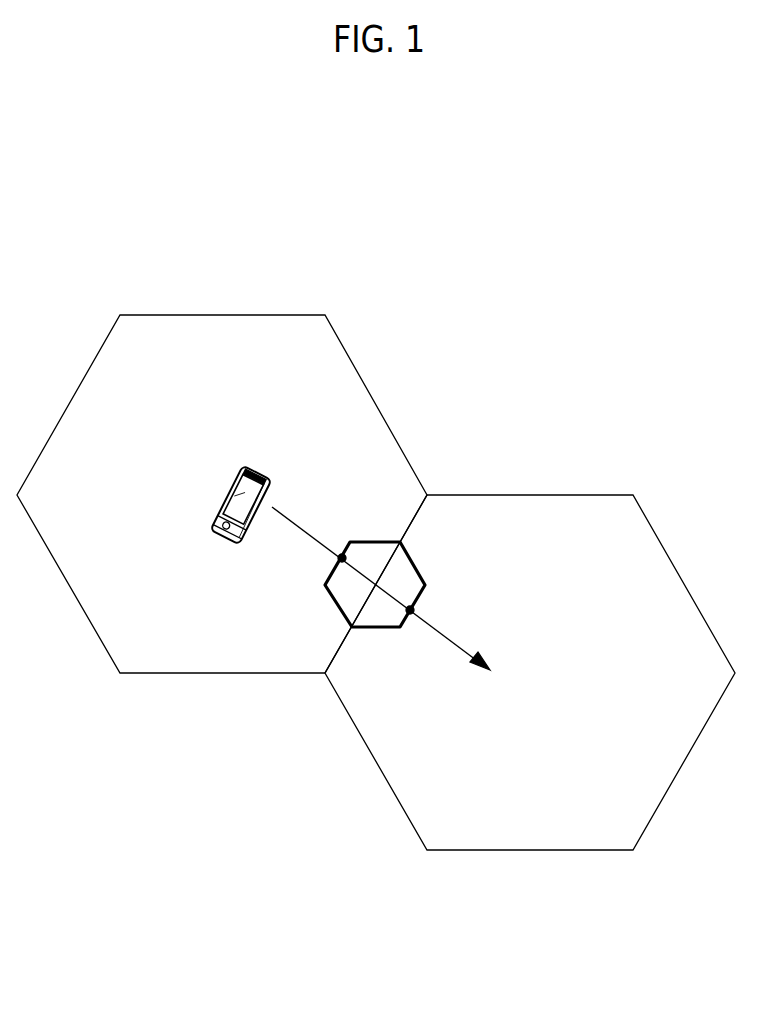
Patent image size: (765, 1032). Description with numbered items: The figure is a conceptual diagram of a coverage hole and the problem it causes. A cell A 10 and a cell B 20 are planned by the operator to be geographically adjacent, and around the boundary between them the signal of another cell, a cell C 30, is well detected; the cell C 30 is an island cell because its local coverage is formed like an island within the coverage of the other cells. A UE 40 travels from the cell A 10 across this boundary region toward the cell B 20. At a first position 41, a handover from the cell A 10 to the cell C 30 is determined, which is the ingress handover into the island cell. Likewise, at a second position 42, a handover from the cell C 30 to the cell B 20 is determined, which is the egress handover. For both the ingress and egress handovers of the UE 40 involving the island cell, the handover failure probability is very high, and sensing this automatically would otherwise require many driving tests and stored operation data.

The cell A 10 is at (372, 402).
The cell B 20 is at (683, 580).
The cell C 30 is at (343, 607).
The UE 40 is at (233, 493).
The first position 41 is at (340, 559).
The second position 42 is at (414, 609).